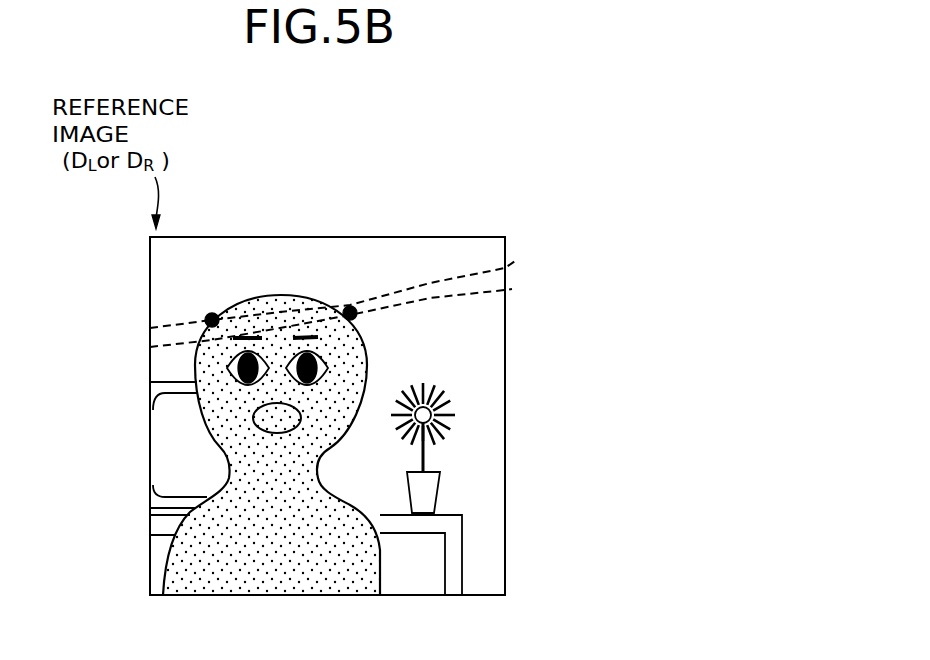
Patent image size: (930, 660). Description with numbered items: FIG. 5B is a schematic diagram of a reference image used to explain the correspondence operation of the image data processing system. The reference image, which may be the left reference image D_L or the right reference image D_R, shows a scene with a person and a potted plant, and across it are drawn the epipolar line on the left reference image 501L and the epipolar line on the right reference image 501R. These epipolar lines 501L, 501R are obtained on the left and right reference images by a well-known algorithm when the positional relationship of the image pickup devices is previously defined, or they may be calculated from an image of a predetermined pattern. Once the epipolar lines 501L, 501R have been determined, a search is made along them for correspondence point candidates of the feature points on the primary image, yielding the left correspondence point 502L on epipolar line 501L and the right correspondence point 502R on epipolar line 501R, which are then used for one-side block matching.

The epipolar line on left reference image 501L is at (470, 279).
The epipolar line on right reference image 501R is at (455, 300).
The left correspondence point 502L is at (212, 314).
The right correspondence point 502R is at (350, 307).